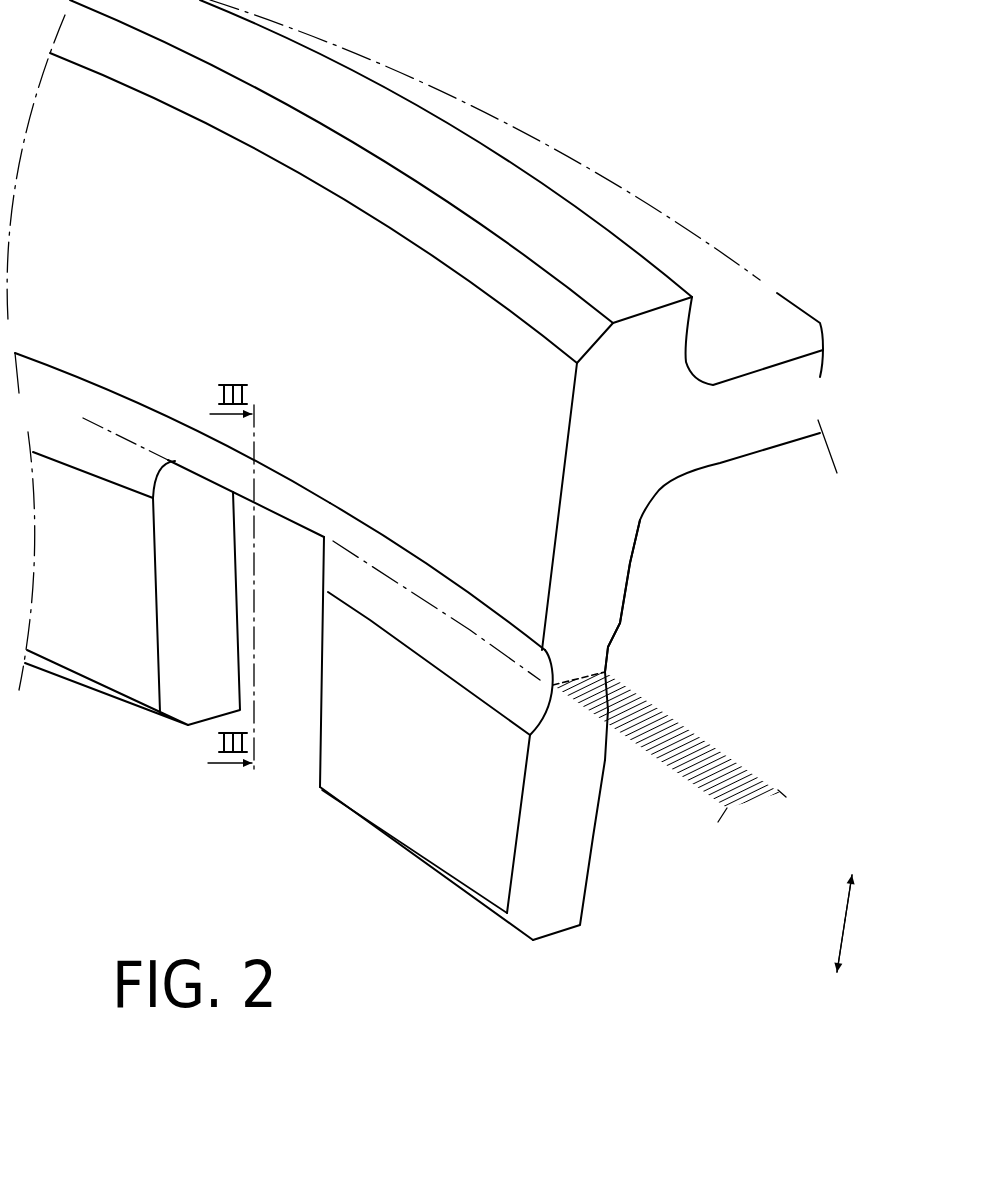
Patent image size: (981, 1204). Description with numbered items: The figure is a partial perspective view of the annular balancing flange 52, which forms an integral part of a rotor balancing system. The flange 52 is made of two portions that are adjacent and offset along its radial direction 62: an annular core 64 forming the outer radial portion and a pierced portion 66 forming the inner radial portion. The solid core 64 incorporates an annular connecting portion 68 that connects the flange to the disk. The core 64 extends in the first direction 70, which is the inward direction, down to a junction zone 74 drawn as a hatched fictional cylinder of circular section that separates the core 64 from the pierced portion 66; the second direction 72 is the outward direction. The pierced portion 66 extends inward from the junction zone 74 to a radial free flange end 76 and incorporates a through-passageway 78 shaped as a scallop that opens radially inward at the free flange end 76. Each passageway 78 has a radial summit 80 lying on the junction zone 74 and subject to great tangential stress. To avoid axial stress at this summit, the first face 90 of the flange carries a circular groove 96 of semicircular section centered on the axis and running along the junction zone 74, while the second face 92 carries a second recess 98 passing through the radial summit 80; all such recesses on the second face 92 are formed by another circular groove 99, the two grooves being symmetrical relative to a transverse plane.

The annular balancing flange 52 is at (576, 126).
The second face 92 is at (523, 378).
The annular connecting portion 68 is at (765, 390).
The annular core 64 is at (599, 539).
The first face 90 is at (630, 572).
The circular groove 96 is at (610, 656).
The junction zone 74 is at (693, 756).
The pierced portion 66 is at (573, 878).
The radial free flange end 76 is at (445, 870).
The radial direction 62 is at (843, 928).
The second direction 72 is at (843, 887).
The first direction 70 is at (837, 972).
The circular groove 99 is at (84, 391).
The radial summit 80 is at (257, 493).
The second recess 98 is at (284, 490).
The through-passageway 78 is at (305, 731).